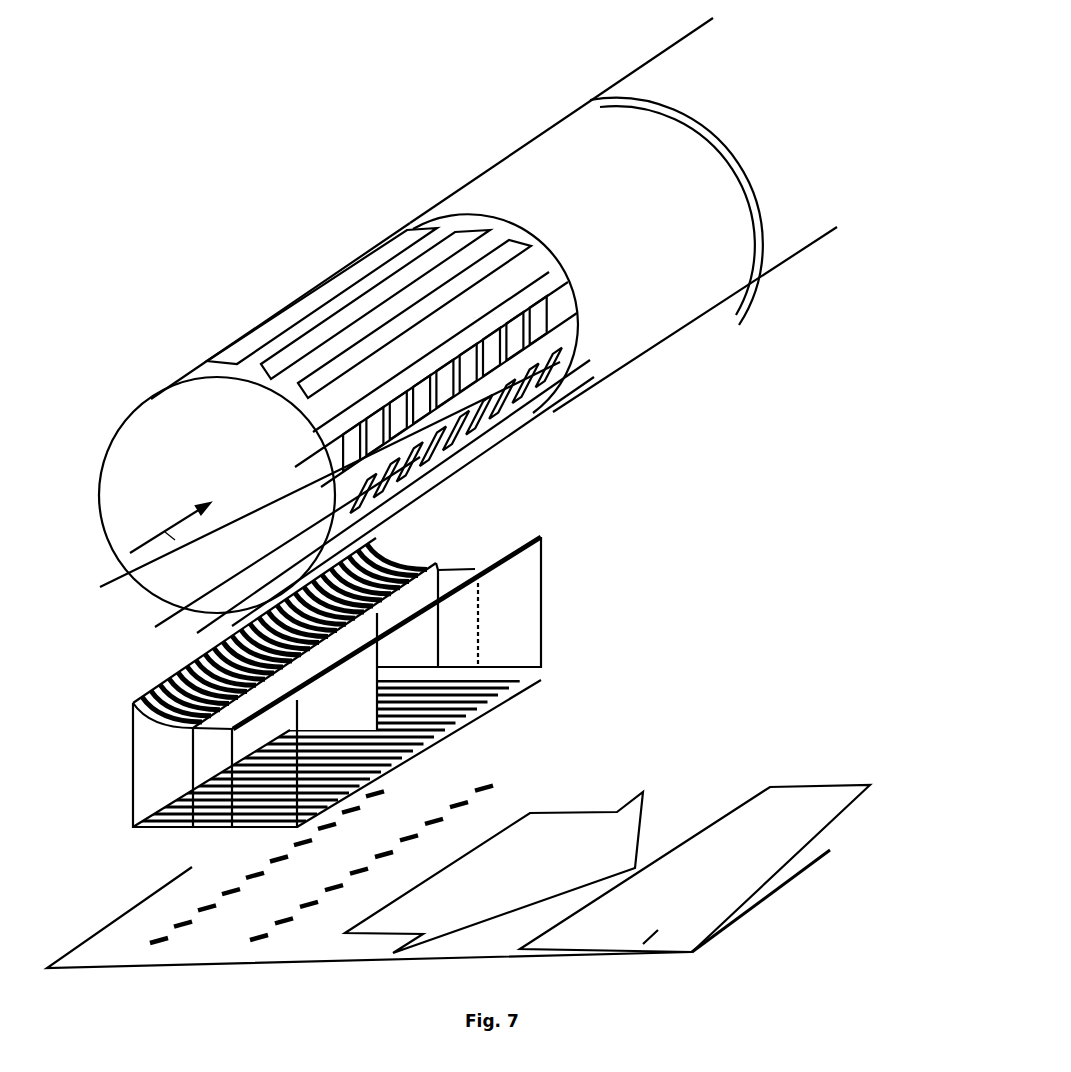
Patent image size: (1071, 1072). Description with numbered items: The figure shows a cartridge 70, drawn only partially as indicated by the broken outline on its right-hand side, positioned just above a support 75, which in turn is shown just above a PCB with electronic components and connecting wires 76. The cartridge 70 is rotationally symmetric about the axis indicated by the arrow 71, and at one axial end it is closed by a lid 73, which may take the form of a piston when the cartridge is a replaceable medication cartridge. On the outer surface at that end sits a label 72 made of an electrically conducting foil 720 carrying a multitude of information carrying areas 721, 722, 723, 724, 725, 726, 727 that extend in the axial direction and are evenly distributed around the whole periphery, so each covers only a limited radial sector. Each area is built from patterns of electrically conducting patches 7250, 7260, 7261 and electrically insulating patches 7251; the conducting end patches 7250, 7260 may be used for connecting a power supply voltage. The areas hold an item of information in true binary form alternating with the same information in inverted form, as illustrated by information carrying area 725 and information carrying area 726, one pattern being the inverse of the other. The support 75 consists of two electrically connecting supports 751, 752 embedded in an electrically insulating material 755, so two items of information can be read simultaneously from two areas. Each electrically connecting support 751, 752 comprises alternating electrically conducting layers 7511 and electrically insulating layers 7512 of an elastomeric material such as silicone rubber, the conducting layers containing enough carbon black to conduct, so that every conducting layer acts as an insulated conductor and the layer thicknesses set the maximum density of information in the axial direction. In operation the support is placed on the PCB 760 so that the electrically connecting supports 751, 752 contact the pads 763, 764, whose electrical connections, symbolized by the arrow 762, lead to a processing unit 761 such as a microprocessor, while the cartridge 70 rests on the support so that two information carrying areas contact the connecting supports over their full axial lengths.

The cartridge 70 is at (522, 122).
The arrow 71 is at (165, 532).
The label 72 is at (575, 288).
The lid 73 is at (197, 428).
The support 75 is at (363, 664).
The PCB with electronic components and connecting wires 76 is at (458, 840).
The electrically conducting foil 720 is at (448, 222).
The information carrying area 721 is at (410, 237).
The information carrying area 722 is at (388, 288).
The information carrying area 723 is at (388, 340).
The information carrying area 724 is at (358, 403).
The information carrying area 725 is at (314, 481).
The information carrying area 726 is at (271, 550).
The information carrying area 727 is at (377, 503).
The electrically connecting support 751 is at (152, 797).
The electrically connecting support 752 is at (520, 650).
The electrically insulating material 755 is at (453, 573).
The PCB 760 is at (773, 892).
The processing unit 761 is at (798, 793).
The arrow 762 is at (573, 818).
The pad 763 is at (493, 782).
The pad 764 is at (397, 783).
The electrically conducting end patch 7250 is at (563, 308).
The electrically insulating patch 7251 is at (562, 358).
The electrically conducting end patch 7260 is at (540, 342).
The electrically conducting patch 7261 is at (549, 410).
The electrically conducting layer 7511 is at (140, 700).
The electrically insulating layer 7512 is at (147, 698).